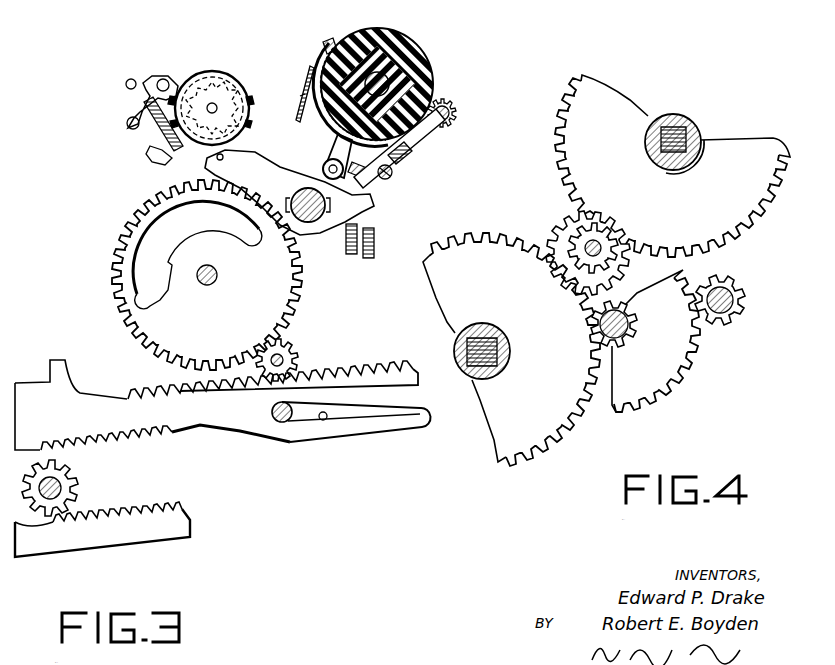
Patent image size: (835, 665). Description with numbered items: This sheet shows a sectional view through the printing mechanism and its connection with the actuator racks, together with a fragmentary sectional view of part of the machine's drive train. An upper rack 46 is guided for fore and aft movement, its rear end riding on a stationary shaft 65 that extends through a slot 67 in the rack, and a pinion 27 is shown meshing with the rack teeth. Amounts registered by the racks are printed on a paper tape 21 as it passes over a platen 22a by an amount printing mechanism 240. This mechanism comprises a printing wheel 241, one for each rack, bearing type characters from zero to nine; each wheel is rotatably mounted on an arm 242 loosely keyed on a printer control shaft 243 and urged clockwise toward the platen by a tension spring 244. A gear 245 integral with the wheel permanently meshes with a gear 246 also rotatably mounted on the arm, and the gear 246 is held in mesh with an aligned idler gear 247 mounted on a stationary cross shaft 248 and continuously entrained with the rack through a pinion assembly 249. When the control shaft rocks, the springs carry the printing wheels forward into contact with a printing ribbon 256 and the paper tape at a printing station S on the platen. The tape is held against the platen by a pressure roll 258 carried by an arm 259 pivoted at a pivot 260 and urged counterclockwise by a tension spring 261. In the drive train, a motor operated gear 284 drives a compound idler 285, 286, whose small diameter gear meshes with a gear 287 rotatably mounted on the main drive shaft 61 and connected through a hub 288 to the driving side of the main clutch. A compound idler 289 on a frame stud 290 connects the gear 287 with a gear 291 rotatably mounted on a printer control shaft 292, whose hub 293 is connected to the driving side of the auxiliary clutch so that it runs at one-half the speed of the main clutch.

In FIG. 3, the paper tape 21 is at (345, 45).
In FIG. 3, the platen 22a is at (390, 42).
In FIG. 3, the pinion 27 is at (82, 470).
In FIG. 3, the upper rack 46 is at (183, 520).
In FIG. 4, the main drive shaft 61 is at (500, 344).
In FIG. 3, the stationary shaft 65 is at (282, 423).
In FIG. 3, the slot 67 is at (324, 420).
In FIG. 3, the amount printing mechanism 240 is at (232, 56).
In FIG. 3, the printing wheel 241 is at (215, 67).
In FIG. 3, the arm 242 is at (268, 170).
In FIG. 3, the printer control shaft 243 is at (308, 225).
In FIG. 3, the tension spring 244 is at (375, 240).
In FIG. 3, the gear 245 is at (240, 88).
In FIG. 3, the gear 246 is at (198, 178).
In FIG. 3, the idler gear 247 is at (135, 225).
In FIG. 3, the stationary cross shaft 248 is at (222, 273).
In FIG. 3, the pinion assembly 249 is at (300, 360).
In FIG. 3, the printing ribbon 256 is at (312, 88).
In FIG. 3, the pressure roll 258 is at (458, 113).
In FIG. 3, the arm 259 is at (428, 140).
In FIG. 3, the pivot 260 is at (398, 175).
In FIG. 3, the tension spring 261 is at (350, 256).
In FIG. 4, the motor operated gear 284 is at (742, 294).
In FIG. 4, the compound idler 285 is at (705, 360).
In FIG. 4, the compound idler 286 is at (638, 330).
In FIG. 4, the gear 287 is at (560, 440).
In FIG. 4, the hub 288 is at (510, 366).
In FIG. 4, the compound idler 289 is at (572, 228).
In FIG. 4, the frame stud 290 is at (584, 245).
In FIG. 4, the gear 291 is at (560, 146).
In FIG. 4, the printer control shaft 292 is at (692, 125).
In FIG. 4, the hub 293 is at (702, 152).
In FIG. 3, the printing station S is at (300, 96).